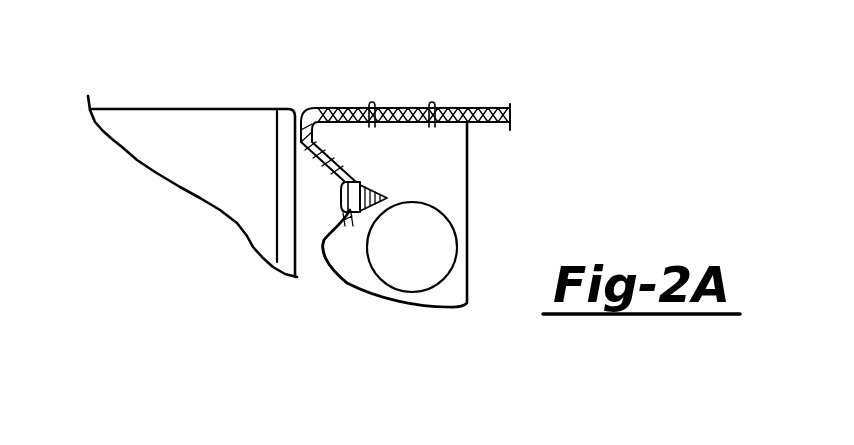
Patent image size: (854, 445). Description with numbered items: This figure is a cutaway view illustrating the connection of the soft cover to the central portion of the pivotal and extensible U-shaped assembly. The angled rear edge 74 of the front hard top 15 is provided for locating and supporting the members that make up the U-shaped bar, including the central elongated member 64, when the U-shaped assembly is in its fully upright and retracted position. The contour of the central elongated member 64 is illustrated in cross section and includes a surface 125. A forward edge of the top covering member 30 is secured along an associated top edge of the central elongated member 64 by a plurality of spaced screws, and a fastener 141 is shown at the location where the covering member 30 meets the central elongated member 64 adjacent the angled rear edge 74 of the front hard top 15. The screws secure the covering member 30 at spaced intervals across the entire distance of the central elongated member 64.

The front hard top 15 is at (158, 118).
The angled rear edge 74 is at (284, 117).
The central elongated member 64 is at (408, 137).
The top covering member 30 is at (470, 116).
The fastener 141 is at (342, 198).
The surface 125 is at (322, 239).